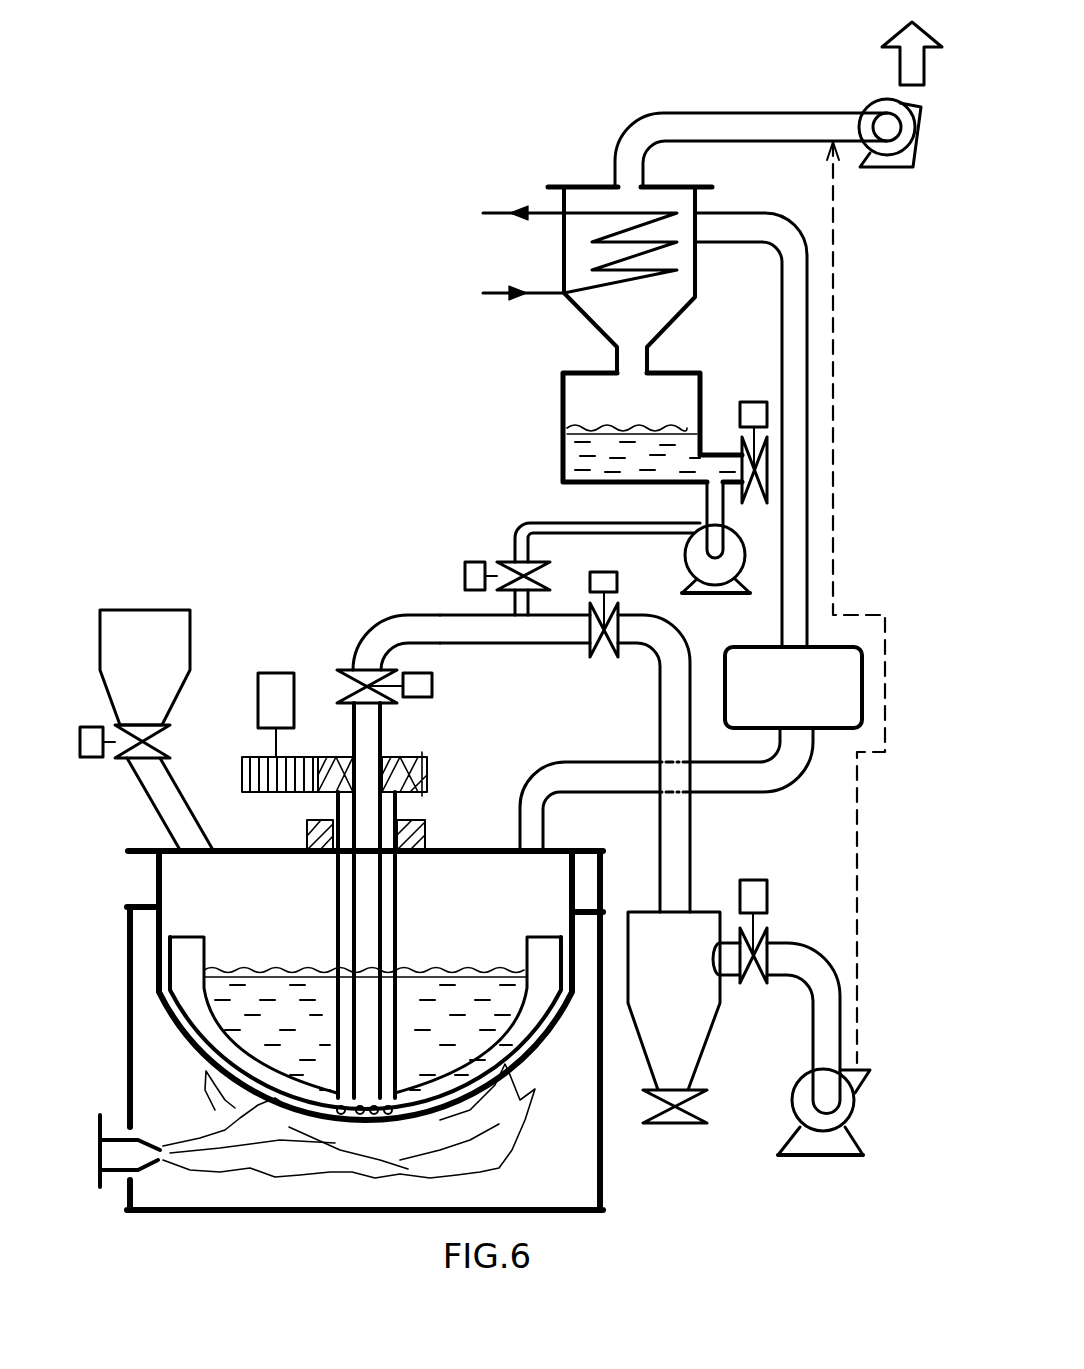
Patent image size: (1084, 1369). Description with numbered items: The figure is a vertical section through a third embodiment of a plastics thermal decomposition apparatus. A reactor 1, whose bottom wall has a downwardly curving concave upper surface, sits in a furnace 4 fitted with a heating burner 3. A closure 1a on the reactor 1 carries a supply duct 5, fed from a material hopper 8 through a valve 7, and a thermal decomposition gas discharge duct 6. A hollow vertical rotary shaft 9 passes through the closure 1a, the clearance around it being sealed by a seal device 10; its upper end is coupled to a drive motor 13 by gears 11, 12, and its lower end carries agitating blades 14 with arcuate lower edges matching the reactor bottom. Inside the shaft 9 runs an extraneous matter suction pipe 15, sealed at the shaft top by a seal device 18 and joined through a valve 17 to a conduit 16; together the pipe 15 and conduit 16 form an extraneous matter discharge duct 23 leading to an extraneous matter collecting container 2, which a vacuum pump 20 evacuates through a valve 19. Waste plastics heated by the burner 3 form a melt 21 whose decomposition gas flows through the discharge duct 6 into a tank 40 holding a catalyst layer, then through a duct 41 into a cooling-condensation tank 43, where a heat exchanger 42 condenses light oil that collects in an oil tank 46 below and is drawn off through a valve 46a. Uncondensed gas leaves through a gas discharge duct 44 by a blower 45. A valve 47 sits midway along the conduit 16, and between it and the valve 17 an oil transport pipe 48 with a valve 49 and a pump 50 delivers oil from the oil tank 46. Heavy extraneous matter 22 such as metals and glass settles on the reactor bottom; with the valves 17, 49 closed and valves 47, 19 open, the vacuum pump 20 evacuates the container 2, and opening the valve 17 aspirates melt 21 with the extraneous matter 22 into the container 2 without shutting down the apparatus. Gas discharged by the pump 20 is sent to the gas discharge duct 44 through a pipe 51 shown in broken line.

The reactor 1 is at (152, 882).
The closure 1a is at (467, 850).
The extraneous matter collecting container 2 is at (637, 897).
The heating burner 3 is at (113, 1138).
The furnace 4 is at (127, 1000).
The supply duct 5 is at (152, 802).
The thermal decomposition gas discharge duct 6 is at (560, 808).
The valve 7 is at (170, 730).
The material hopper 8 is at (147, 610).
The hollow vertical rotary shaft 9 is at (395, 896).
The seal device 10 is at (310, 820).
The gear 11 is at (412, 760).
The gear 12 is at (242, 774).
The drive motor 13 is at (268, 673).
The agitating blades 14 is at (208, 1018).
The extraneous matter suction pipe 15 is at (340, 915).
The conduit 16 is at (405, 613).
The valve 17 is at (350, 670).
The seal device 18 is at (388, 757).
The valve 19 is at (757, 985).
The vacuum pump 20 is at (795, 1122).
The melt 21 is at (473, 975).
The extraneous matter 22 is at (392, 1124).
The extraneous matter discharge duct 23 is at (432, 613).
The tank 40 is at (832, 729).
The duct 41 is at (782, 316).
The heat exchanger 42 is at (600, 293).
The cooling-condensation tank 43 is at (562, 250).
The gas discharge duct 44 is at (650, 112).
The blower 45 is at (872, 100).
The oil tank 46 is at (563, 405).
The valve 46a is at (767, 478).
The valve 47 is at (603, 657).
The oil transport pipe 48 is at (538, 518).
The valve 49 is at (500, 563).
The pump 50 is at (686, 558).
The pipe 51 is at (857, 800).